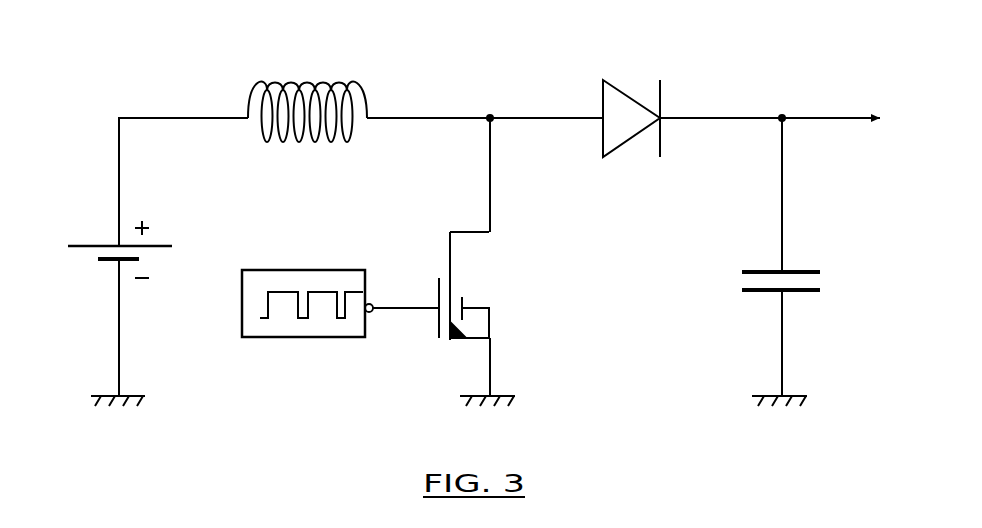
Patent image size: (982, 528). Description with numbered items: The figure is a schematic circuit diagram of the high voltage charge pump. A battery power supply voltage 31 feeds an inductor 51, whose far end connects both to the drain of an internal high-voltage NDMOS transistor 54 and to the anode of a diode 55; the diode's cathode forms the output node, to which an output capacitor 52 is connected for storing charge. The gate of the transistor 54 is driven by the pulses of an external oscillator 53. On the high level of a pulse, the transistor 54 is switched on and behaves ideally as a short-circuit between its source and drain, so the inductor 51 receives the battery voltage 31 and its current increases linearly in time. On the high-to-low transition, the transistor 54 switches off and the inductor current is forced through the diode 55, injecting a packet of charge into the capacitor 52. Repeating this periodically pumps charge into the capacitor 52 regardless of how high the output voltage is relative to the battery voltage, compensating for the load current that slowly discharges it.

The battery power supply voltage 31 is at (103, 233).
The inductor 51 is at (325, 77).
The capacitor 52 is at (830, 277).
The external oscillator 53 is at (303, 339).
The high-voltage NDMOS transistor 54 is at (465, 287).
The diode 55 is at (637, 92).